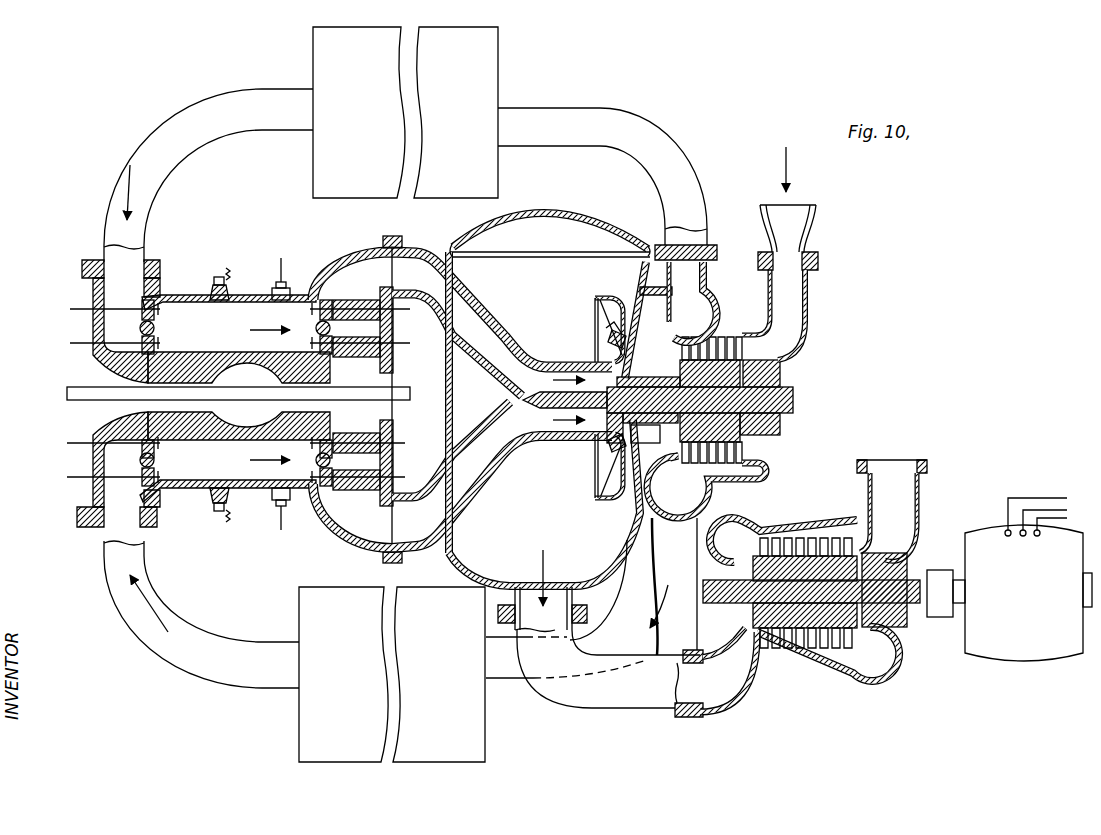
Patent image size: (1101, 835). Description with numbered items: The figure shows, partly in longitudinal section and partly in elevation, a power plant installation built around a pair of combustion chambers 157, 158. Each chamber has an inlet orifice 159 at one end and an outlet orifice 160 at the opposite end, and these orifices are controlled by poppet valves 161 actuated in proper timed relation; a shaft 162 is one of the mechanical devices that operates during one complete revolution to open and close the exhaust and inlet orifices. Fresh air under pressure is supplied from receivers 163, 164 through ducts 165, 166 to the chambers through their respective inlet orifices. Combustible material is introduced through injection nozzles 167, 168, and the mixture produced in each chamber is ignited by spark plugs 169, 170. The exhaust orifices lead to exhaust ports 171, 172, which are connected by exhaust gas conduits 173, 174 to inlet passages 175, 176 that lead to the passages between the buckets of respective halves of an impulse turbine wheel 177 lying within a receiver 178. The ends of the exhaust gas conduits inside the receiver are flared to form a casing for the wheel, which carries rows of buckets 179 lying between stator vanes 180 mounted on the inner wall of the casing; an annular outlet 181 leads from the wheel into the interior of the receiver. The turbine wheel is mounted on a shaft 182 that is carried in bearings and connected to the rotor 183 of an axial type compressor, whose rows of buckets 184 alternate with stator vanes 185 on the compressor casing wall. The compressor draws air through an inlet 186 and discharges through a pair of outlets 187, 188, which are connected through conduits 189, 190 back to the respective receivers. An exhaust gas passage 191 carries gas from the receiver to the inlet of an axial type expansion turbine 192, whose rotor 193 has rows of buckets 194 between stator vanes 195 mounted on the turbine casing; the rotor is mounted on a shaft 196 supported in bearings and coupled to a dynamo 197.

The combustion chamber 157 is at (252, 293).
The combustion chamber 158 is at (188, 497).
The inlet orifice 159 is at (170, 290).
The outlet orifice 160 is at (324, 275).
The poppet valve 161 is at (93, 300).
The shaft 162 is at (90, 387).
The receiver 163 is at (322, 62).
The receiver 164 is at (300, 728).
The duct 165 is at (183, 133).
The duct 166 is at (210, 667).
The injection nozzle 167 is at (286, 290).
The injection nozzle 168 is at (282, 507).
The spark plug 169 is at (208, 287).
The spark plug 170 is at (216, 500).
The exhaust port 171 is at (363, 272).
The exhaust port 172 is at (357, 527).
The exhaust gas conduit 173 is at (440, 310).
The exhaust gas conduit 174 is at (420, 517).
The inlet passage 175 is at (605, 370).
The inlet passage 176 is at (607, 457).
The impulse turbine wheel 177 is at (595, 440).
The receiver 178 is at (590, 217).
The buckets 179 is at (617, 318).
The stator vanes 180 is at (617, 333).
The annular outlet 181 is at (620, 310).
The shaft 182 is at (643, 353).
The rotor 183 is at (743, 375).
The buckets 184 is at (723, 337).
The stator vanes 185 is at (735, 337).
The inlet 186 is at (787, 312).
The outlet 187 is at (697, 300).
The outlet 188 is at (695, 497).
The conduit 189 is at (657, 138).
The conduit 190 is at (635, 630).
The exhaust gas passage 191 is at (607, 693).
The expansion turbine 192 is at (793, 528).
The rotor 193 is at (778, 655).
The buckets 194 is at (850, 672).
The stator vanes 195 is at (835, 660).
The shaft 196 is at (912, 578).
The dynamo 197 is at (1003, 660).